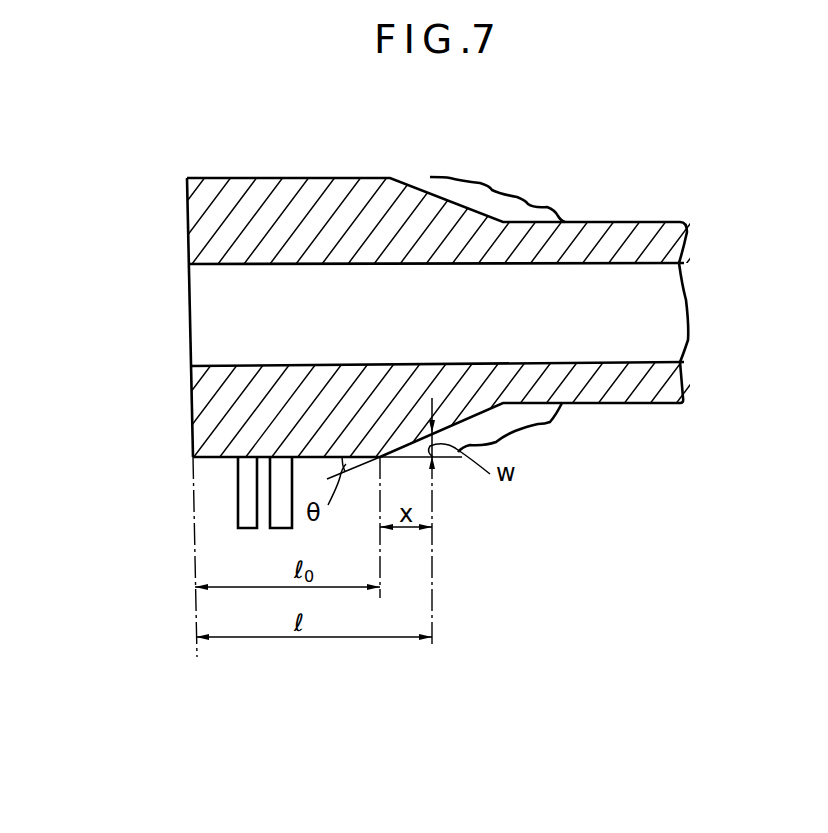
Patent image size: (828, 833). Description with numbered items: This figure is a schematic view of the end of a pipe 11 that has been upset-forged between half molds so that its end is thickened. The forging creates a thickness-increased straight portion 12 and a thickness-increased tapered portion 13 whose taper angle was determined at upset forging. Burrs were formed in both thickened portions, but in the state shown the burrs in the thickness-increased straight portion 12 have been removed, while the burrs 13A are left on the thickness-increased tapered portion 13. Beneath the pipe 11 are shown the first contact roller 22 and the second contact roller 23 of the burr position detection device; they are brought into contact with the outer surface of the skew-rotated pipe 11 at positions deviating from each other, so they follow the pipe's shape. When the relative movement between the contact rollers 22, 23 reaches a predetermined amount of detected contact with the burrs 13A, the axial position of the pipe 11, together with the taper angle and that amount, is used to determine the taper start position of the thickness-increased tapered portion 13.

The pipe 11 is at (180, 218).
The thickness-increased straight portion 12 is at (287, 192).
The thickness-increased tapered portion 13 is at (444, 207).
The burrs 13A is at (530, 201).
The first contact roller 22 is at (238, 495).
The second contact roller 23 is at (283, 528).